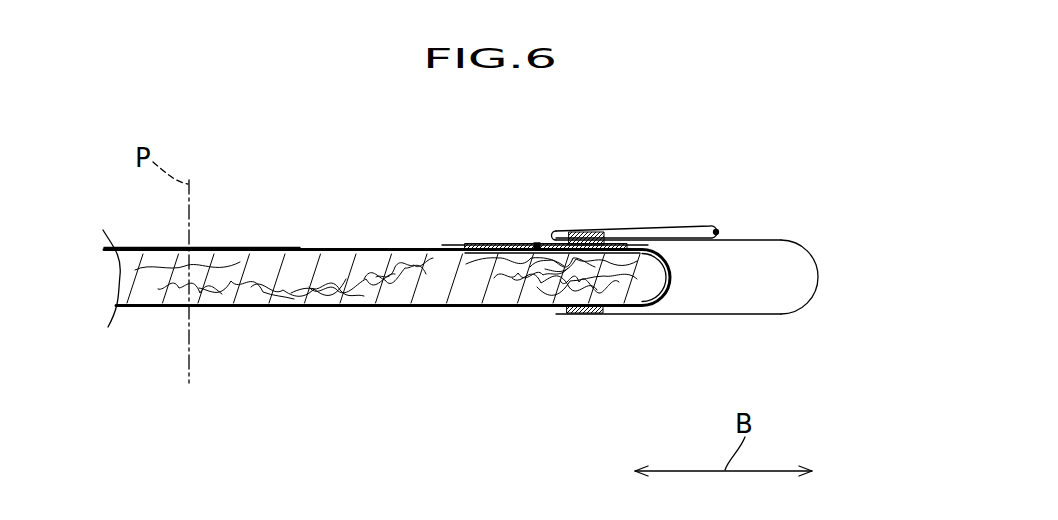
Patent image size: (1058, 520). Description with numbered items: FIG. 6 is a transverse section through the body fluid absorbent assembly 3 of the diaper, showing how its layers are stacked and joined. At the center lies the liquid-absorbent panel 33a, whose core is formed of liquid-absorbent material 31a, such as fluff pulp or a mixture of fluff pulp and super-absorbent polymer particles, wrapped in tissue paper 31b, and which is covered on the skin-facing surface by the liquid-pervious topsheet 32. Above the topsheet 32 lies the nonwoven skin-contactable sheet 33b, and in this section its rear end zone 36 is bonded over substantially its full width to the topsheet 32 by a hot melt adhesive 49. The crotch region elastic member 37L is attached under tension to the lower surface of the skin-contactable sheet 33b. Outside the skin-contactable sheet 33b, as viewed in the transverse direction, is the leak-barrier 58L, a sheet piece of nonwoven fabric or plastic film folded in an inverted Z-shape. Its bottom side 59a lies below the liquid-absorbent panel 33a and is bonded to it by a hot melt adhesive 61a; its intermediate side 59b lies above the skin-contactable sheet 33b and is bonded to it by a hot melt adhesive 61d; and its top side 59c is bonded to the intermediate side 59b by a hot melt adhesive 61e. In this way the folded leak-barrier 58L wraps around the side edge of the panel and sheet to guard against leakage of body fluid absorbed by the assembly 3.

The body fluid absorbent assembly 3 is at (123, 133).
The topsheet 32 is at (224, 248).
The liquid-absorbent material 31a is at (255, 300).
The tissue paper 31b is at (318, 298).
The liquid-absorbent panel 33a is at (151, 246).
The skin-contactable sheet 33b is at (452, 242).
The rear end zone 36 is at (490, 244).
The crotch region elastic member 37L is at (537, 250).
The hot melt adhesive 49 is at (508, 257).
The hot melt adhesive 61a is at (588, 313).
The hot melt adhesive 61e is at (587, 232).
The top side 59c is at (668, 227).
The hot melt adhesive 61d is at (553, 234).
The intermediate side 59b is at (757, 240).
The bottom side 59a is at (627, 314).
The leak-barrier 58L is at (811, 254).